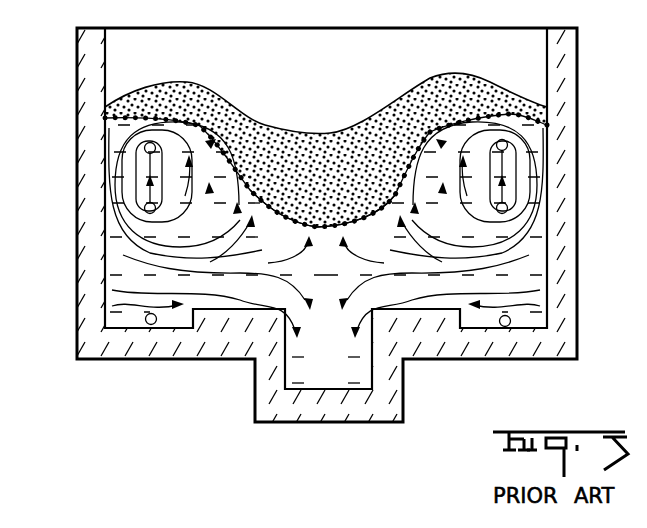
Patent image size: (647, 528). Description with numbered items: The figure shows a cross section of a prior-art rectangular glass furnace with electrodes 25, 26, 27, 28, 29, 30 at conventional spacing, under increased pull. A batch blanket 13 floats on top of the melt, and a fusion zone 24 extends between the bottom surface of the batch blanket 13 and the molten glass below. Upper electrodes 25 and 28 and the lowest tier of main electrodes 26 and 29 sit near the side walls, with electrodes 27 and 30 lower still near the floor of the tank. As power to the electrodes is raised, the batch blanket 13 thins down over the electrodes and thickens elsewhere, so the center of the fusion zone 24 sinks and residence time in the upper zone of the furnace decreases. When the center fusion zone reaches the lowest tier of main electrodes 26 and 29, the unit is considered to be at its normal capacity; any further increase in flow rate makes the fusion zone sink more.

The batch blanket 13 is at (327, 155).
The fusion zone 24 is at (288, 226).
The electrode 25 is at (144, 149).
The main electrode 26 is at (144, 209).
The electrode 27 is at (150, 326).
The electrode 28 is at (508, 147).
The main electrode 29 is at (508, 208).
The electrode 30 is at (505, 328).